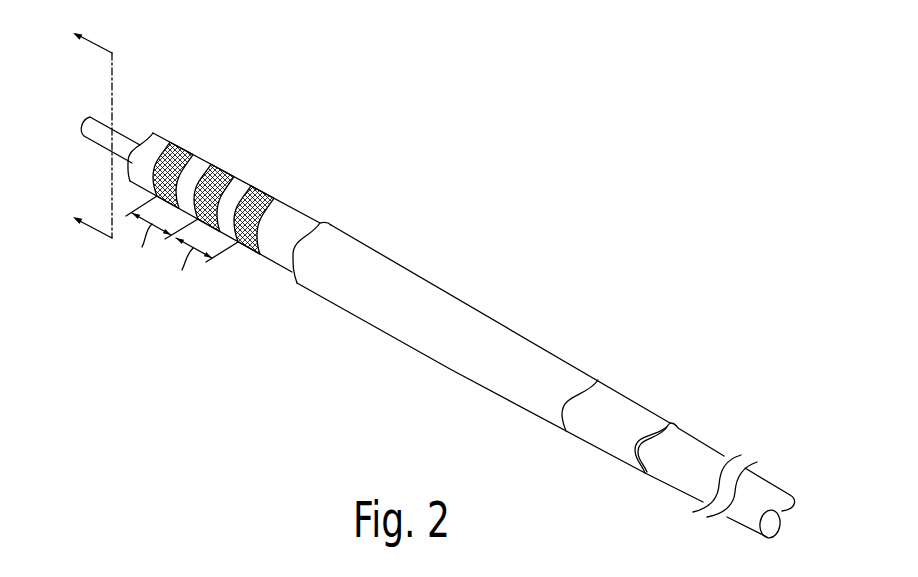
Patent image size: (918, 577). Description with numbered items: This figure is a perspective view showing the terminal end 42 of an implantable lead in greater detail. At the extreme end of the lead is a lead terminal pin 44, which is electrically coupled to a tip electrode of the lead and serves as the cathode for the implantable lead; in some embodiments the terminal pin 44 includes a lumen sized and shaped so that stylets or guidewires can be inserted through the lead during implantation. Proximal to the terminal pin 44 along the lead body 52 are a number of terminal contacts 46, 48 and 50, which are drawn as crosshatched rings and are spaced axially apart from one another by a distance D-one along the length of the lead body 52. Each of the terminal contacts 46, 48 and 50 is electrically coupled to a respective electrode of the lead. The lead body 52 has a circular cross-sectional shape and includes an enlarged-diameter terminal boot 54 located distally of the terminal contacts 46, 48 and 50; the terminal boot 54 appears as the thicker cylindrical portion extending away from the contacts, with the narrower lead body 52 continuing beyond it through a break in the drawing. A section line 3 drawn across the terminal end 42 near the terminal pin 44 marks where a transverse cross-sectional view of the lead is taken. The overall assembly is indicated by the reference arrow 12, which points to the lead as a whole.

The lead 12 is at (547, 226).
The terminal end 42 is at (292, 105).
The lead terminal pin 44 is at (90, 131).
The terminal contact 46 is at (256, 195).
The terminal contact 48 is at (216, 172).
The terminal contact 50 is at (176, 150).
The lead body 52 is at (676, 476).
The terminal boot 54 is at (412, 349).
The line 3- 3 is at (83, 126).